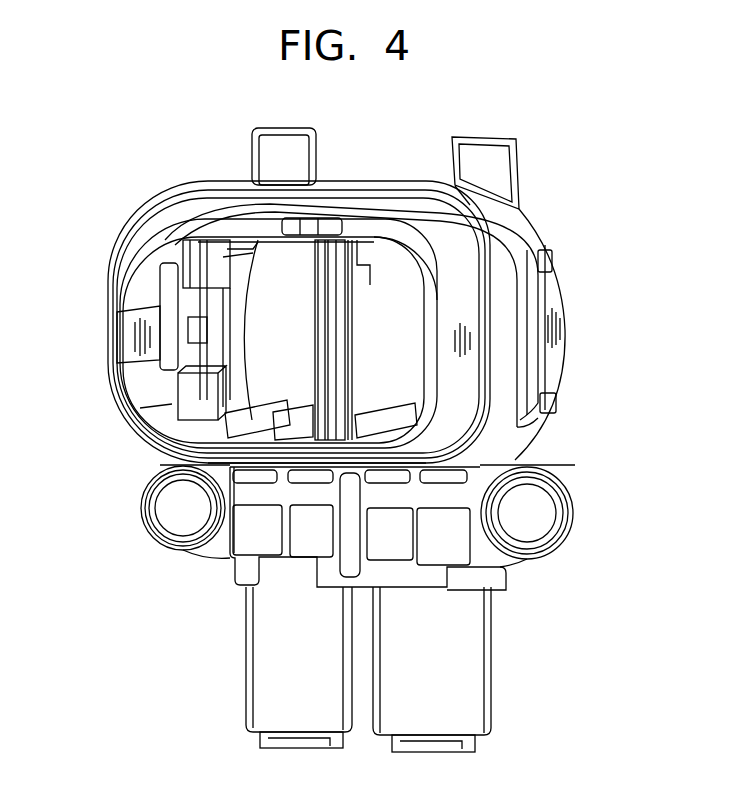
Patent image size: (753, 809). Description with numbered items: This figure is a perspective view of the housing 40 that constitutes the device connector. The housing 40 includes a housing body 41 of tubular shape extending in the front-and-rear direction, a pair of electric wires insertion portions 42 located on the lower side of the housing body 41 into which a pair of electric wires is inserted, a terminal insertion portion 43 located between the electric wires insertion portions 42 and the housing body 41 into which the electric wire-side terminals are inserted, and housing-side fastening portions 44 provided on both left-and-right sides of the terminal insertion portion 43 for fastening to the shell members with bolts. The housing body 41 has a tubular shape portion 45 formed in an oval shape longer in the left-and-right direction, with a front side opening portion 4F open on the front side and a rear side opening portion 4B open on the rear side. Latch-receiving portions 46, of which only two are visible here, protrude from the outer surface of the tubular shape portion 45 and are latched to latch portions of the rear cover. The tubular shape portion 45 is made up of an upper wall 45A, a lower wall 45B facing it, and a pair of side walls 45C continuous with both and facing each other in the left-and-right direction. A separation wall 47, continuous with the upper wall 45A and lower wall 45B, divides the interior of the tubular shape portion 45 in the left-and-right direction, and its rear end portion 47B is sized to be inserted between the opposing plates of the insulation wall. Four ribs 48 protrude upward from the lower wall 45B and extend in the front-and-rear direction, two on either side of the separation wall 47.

The housing 40 is at (620, 119).
The housing body 41 is at (562, 327).
The electric wires insertion portion 42 is at (330, 661).
The terminal insertion portion 43 is at (548, 467).
The housing-side fastening portion 44 is at (143, 510).
The tubular shape portion 45 is at (560, 360).
The upper wall 45A is at (373, 182).
The lower wall 45B is at (160, 445).
The side wall 45C is at (130, 330).
The latch-receiving portion 46 is at (548, 262).
The separation wall 47 is at (352, 345).
The rear end portion 47B is at (362, 265).
The rib 48 is at (275, 408).
The rear side opening portion 4B is at (567, 303).
The front side opening portion 4F is at (110, 372).